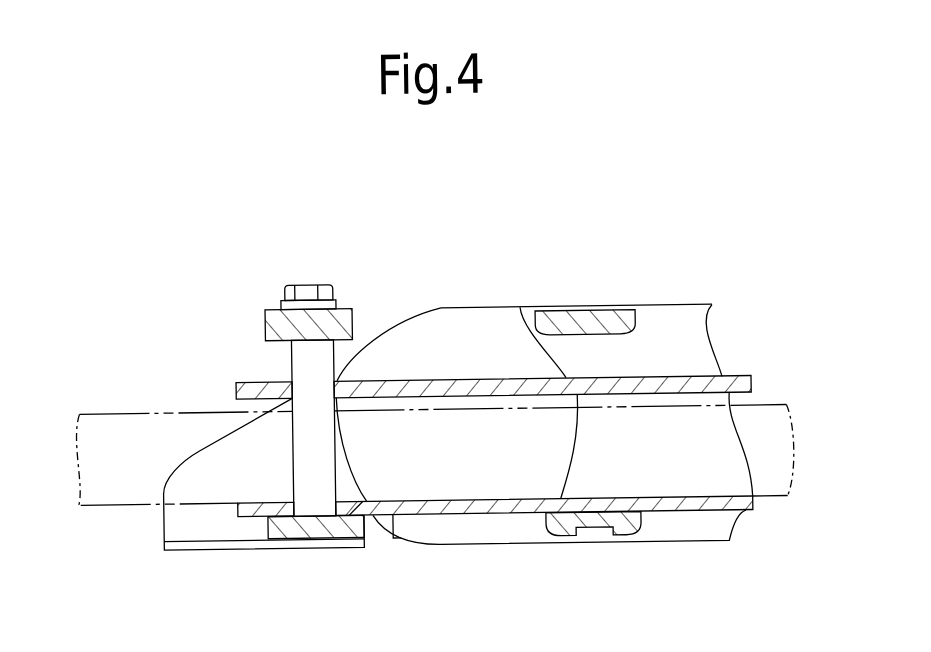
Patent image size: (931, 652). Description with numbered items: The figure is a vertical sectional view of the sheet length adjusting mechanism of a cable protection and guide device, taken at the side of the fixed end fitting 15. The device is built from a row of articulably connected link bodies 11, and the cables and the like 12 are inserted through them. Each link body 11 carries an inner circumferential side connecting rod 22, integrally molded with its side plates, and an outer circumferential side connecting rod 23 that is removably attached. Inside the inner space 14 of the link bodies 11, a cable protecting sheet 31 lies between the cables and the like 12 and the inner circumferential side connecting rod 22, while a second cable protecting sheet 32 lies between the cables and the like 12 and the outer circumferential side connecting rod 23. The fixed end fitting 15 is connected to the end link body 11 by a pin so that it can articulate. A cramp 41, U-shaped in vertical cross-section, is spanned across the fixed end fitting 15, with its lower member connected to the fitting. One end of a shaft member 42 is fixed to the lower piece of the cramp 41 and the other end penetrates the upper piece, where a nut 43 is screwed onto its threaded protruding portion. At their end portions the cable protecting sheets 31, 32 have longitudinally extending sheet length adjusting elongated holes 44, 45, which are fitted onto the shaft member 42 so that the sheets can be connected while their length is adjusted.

The link body 11 is at (680, 308).
The cable and the like 12 is at (105, 500).
The inner space 14 is at (683, 470).
The fixed end fitting 15 is at (230, 546).
The inner circumferential side connecting rod 22 is at (583, 311).
The outer circumferential side connecting rod 23 is at (590, 529).
The cable protecting sheet 31 is at (455, 379).
The cable protecting sheet 32 is at (457, 514).
The cramp 41 is at (267, 322).
The shaft member 42 is at (312, 498).
The nut 43 is at (313, 283).
The sheet length adjusting elongated hole 44 is at (287, 387).
The sheet length adjusting elongated hole 45 is at (348, 514).